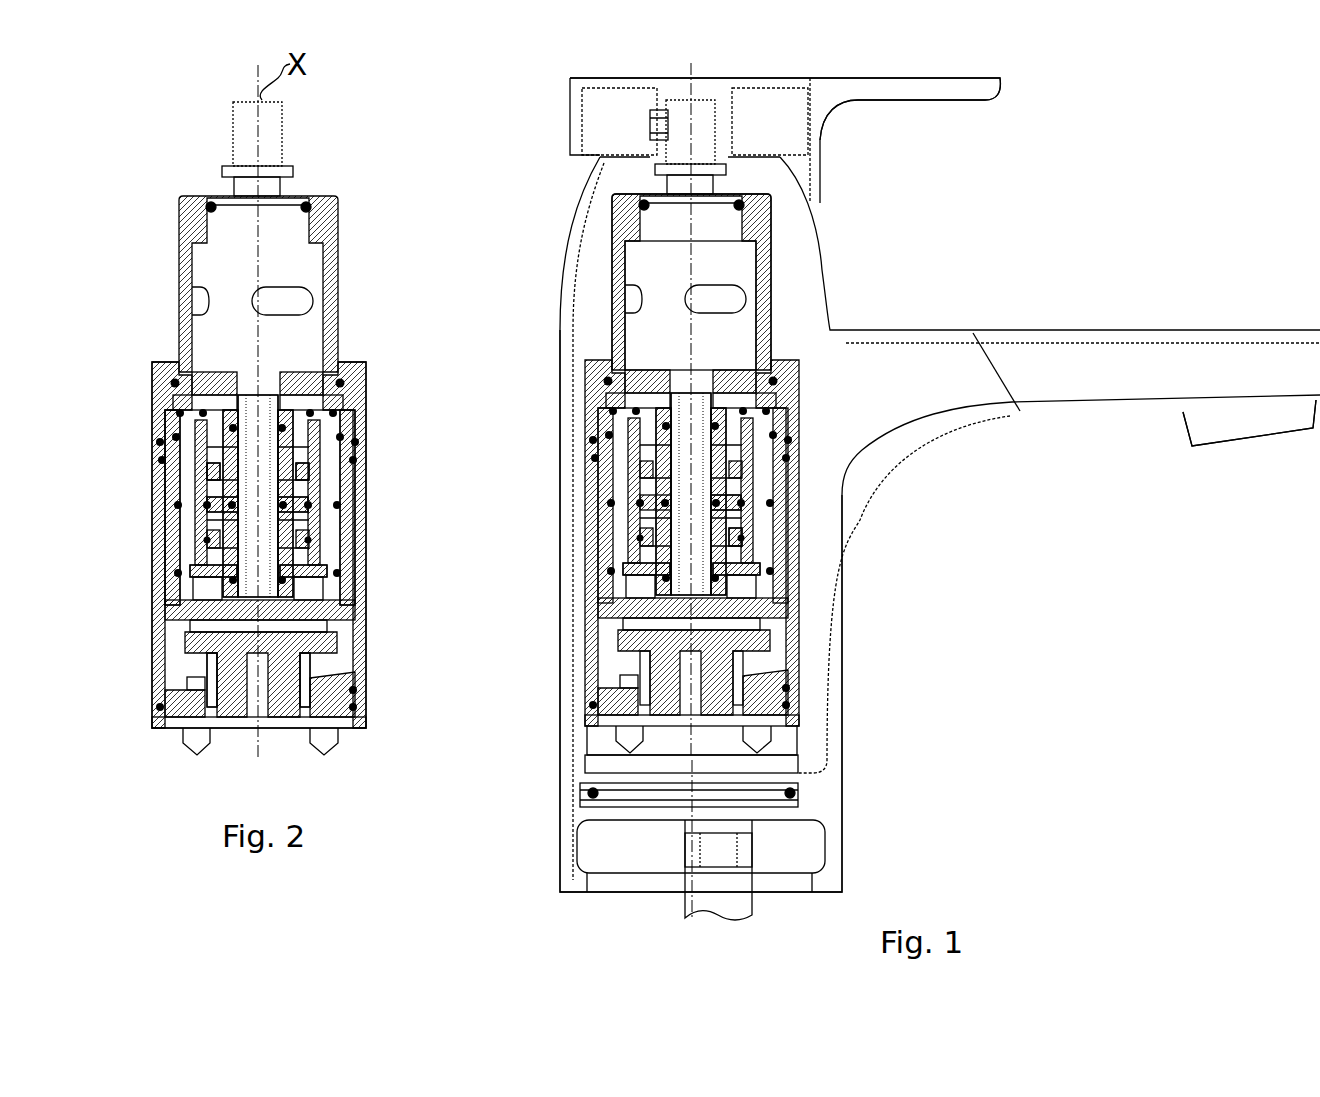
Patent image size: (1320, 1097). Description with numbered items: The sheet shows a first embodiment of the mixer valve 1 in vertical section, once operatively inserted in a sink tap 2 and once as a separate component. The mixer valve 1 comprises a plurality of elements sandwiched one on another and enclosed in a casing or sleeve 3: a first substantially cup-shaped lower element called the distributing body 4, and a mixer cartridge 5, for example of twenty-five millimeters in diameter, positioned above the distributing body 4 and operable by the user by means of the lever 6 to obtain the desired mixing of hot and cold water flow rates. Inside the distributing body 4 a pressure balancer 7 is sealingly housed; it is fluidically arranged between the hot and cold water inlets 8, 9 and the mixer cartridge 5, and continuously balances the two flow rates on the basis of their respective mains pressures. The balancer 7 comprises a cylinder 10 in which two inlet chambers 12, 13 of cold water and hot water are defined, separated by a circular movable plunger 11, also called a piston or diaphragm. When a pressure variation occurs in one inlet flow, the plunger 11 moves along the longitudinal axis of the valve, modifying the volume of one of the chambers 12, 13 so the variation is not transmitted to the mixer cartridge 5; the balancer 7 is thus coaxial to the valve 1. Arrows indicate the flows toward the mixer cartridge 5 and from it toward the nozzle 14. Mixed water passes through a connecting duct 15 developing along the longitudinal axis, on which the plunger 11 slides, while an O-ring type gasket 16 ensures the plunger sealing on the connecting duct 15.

In FIG. 1, the mixer valve 1 is at (602, 241).
In FIG. 1, the sink tap 2 is at (834, 268).
In FIG. 2, the casing or sleeve 3 is at (153, 635).
In FIG. 2, the distributing body 4 is at (165, 557).
In FIG. 1, the mixer cartridge 5 is at (652, 345).
In FIG. 1, the lever 6 is at (883, 90).
In FIG. 2, the pressure balancer 7 is at (328, 505).
In FIG. 1, the pressure balancer 7 is at (647, 523).
In FIG. 2, the hot water inlet 8 is at (218, 722).
In FIG. 2, the cold water inlet 9 is at (305, 728).
In FIG. 2, the cylinder 10 is at (215, 513).
In FIG. 2, the movable plunger 11 is at (230, 480).
In FIG. 1, the movable plunger 11 is at (607, 493).
In FIG. 1, the cold water inlet chamber 12 is at (739, 497).
In FIG. 1, the hot water inlet chamber 13 is at (733, 522).
In FIG. 1, the nozzle 14 is at (1203, 437).
In FIG. 2, the connecting duct 15 is at (325, 598).
In FIG. 1, the connecting duct 15 is at (660, 578).
In FIG. 2, the O-ring type gasket 16 is at (296, 498).